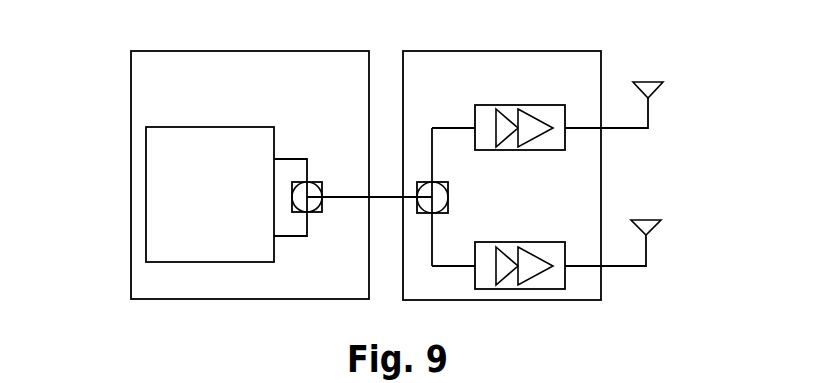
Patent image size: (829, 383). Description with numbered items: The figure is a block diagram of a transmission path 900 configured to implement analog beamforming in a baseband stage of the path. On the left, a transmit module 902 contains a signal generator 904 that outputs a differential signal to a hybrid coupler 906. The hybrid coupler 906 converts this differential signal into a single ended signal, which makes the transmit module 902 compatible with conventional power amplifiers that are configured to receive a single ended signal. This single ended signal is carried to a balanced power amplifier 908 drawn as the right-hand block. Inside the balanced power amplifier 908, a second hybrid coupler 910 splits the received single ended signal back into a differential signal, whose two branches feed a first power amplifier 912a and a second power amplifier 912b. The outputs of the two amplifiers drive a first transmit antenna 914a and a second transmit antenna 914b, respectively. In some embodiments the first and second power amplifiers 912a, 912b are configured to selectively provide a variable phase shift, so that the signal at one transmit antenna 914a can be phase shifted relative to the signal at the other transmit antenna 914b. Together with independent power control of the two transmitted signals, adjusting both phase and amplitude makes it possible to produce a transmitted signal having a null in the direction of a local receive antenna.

The transmission path 900 is at (85, 31).
The transmit module 902 is at (267, 108).
The signal generator 904 is at (230, 227).
The hybrid coupler 906 is at (316, 181).
The balanced power amplifier 908 is at (584, 86).
The hybrid coupler 910 is at (443, 181).
The first power amplifier 912a is at (532, 150).
The second power amplifier 912b is at (532, 242).
The first transmit antenna 914a is at (645, 82).
The second transmit antenna 914b is at (643, 220).